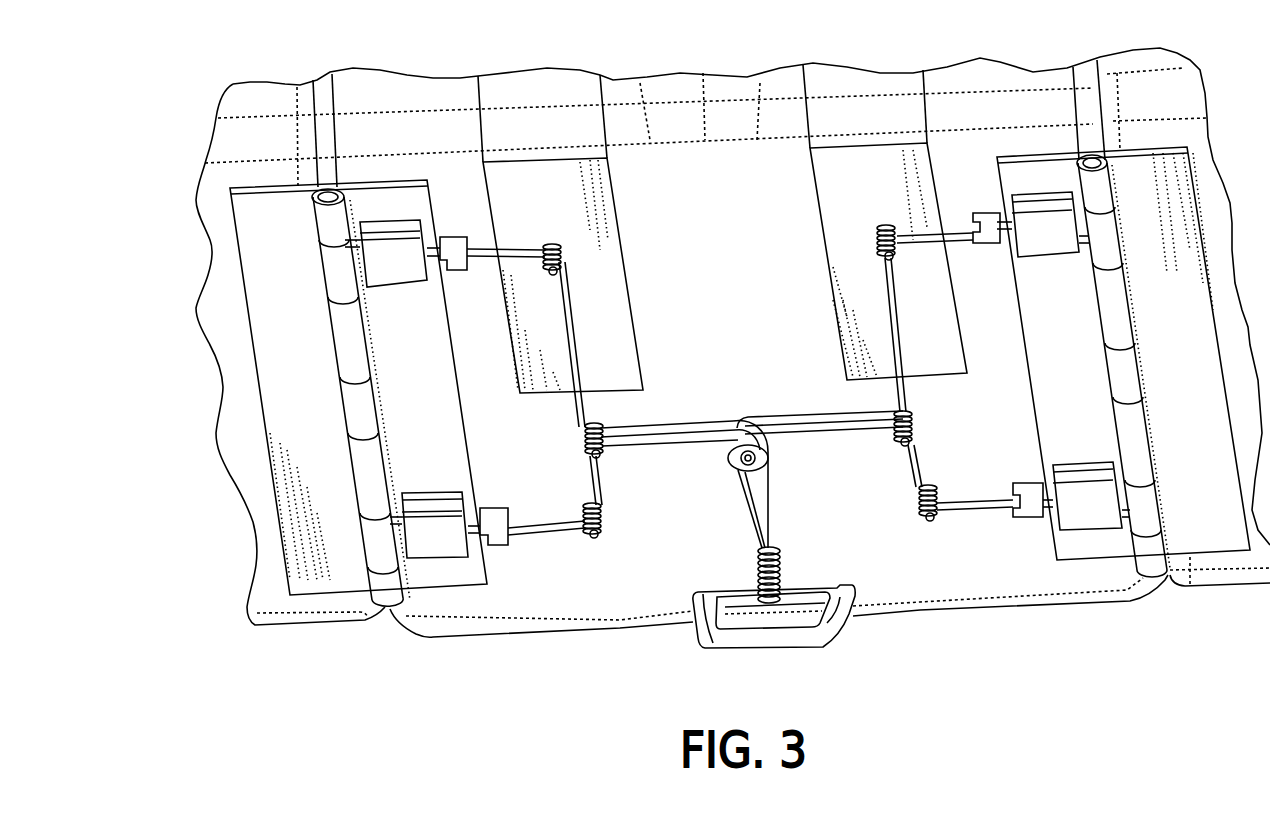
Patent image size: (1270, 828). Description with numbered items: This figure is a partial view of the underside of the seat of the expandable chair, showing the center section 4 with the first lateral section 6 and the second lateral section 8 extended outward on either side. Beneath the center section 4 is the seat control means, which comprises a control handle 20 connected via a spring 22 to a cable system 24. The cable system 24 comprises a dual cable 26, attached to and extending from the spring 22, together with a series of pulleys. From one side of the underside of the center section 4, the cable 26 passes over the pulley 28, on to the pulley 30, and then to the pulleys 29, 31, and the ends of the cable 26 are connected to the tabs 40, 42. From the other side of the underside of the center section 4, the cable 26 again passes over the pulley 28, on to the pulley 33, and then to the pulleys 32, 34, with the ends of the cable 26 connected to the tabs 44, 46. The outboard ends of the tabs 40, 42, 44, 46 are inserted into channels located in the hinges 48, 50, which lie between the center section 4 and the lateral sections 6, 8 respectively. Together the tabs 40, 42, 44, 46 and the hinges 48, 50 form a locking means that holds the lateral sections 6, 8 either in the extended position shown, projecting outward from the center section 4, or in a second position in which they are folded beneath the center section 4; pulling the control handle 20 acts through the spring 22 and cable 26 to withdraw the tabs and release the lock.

The center section 4 is at (722, 242).
The first lateral section 6 is at (232, 141).
The second lateral section 8 is at (1172, 94).
The control handle 20 is at (797, 642).
The spring 22 is at (773, 568).
The cable system 24 is at (712, 418).
The dual cable 26 is at (833, 418).
The pulley 28 is at (762, 455).
The pulley 29 is at (560, 243).
The pulley 30 is at (598, 453).
The pulley 31 is at (598, 533).
The pulley 32 is at (932, 522).
The pulley 33 is at (915, 441).
The pulley 34 is at (887, 228).
The tab 40 is at (455, 235).
The tab 42 is at (500, 512).
The tab 44 is at (982, 215).
The tab 46 is at (1035, 490).
The hinge 48 is at (357, 407).
The hinge 50 is at (1120, 362).